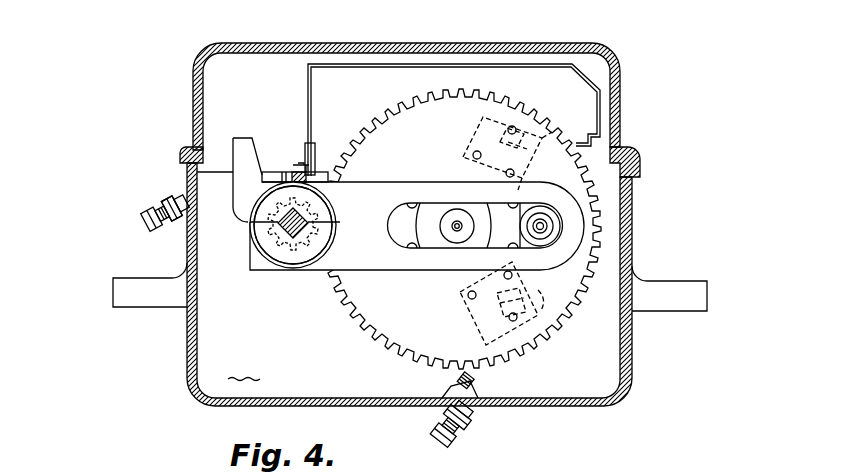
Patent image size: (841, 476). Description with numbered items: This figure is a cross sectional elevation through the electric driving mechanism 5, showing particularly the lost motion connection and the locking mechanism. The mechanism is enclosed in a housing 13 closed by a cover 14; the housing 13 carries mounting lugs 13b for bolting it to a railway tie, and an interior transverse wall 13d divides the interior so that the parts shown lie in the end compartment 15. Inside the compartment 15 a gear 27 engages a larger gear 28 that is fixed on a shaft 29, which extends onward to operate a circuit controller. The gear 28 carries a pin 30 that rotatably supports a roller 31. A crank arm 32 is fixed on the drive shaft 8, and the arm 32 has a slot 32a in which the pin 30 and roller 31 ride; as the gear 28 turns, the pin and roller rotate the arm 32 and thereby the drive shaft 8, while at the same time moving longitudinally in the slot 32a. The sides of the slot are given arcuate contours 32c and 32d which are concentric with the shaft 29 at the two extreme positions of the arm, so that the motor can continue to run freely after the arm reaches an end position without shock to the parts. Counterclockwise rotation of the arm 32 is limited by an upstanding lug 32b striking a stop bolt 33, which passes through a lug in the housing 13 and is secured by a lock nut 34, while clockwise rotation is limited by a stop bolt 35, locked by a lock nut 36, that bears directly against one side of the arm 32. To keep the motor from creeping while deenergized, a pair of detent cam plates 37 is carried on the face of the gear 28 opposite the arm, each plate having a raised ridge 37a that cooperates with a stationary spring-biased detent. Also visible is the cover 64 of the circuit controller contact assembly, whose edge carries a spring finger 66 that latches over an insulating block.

The electric driving mechanism 5 is at (150, 78).
The cover 14 is at (280, 47).
The housing 13 is at (187, 356).
The mounting lugs 13b is at (121, 293).
The interior transverse wall 13d is at (218, 182).
The compartment 15 is at (244, 367).
The stop bolt 33 is at (158, 208).
The lock nut 34 is at (176, 220).
The gear 28 is at (348, 288).
The cover 64 is at (322, 83).
The spring finger 66 is at (305, 162).
The crank arm 32 is at (444, 270).
The slot 32a is at (525, 250).
The upstanding lug 32b is at (248, 147).
The arcuate portion 32c is at (401, 194).
The arcuate portion 32d is at (412, 249).
The drive shaft 8 is at (285, 231).
The gear 27 is at (283, 266).
The shaft 29 is at (458, 237).
The pin 30 is at (522, 203).
The roller 31 is at (560, 214).
The detent cam plates 37 is at (552, 133).
The raised ridge 37a is at (522, 181).
The stop bolt 35 is at (471, 386).
The lock nut 36 is at (458, 428).